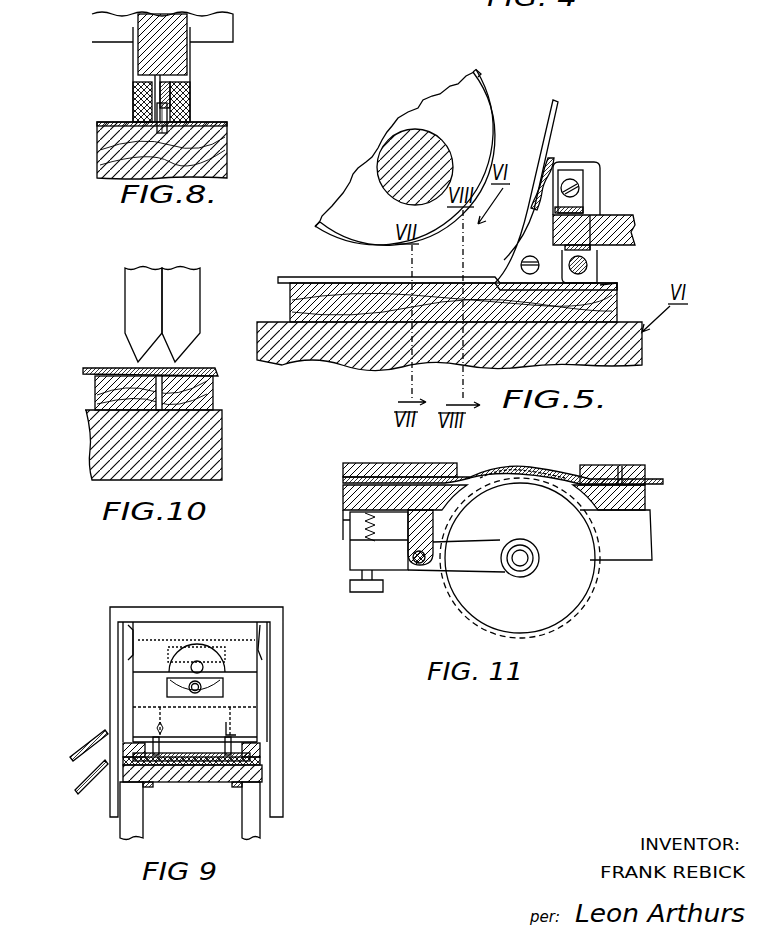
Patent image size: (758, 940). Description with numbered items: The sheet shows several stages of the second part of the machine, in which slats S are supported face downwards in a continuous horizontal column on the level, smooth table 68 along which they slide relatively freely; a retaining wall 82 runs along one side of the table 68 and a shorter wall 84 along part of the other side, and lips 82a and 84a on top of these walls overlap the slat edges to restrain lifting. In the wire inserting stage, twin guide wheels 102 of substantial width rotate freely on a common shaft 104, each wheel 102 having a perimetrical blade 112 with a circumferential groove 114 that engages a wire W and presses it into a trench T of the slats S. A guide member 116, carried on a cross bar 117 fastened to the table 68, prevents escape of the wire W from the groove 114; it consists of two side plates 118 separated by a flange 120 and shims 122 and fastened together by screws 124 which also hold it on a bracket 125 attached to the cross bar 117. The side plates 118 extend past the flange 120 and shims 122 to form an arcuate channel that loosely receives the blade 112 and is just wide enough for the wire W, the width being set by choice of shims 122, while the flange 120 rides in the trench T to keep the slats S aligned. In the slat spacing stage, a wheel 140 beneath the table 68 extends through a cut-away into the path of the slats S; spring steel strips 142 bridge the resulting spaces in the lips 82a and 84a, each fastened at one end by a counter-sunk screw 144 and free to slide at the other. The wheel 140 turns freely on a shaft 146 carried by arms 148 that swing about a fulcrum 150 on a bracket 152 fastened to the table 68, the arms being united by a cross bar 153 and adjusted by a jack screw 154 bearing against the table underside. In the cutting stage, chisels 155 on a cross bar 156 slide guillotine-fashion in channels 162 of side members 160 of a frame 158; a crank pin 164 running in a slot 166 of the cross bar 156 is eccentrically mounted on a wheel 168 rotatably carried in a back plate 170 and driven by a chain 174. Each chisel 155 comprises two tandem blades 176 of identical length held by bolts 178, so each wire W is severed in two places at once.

In FIG. 8, the guide wheel 102 is at (187, 55).
In FIG. 5, the guide wheel 102 is at (419, 100).
In FIG. 5, the common shaft 104 is at (386, 144).
In FIG. 5, the perimetrical blade 112 is at (484, 72).
In FIG. 5, the circumferential groove 114 is at (540, 99).
In FIG. 5, the guide member 116 is at (652, 186).
In FIG. 8, the cross bar 117 is at (233, 38).
In FIG. 5, the cross bar 117 is at (634, 226).
In FIG. 8, the side plate 118 is at (133, 96).
In FIG. 5, the side plate 118 is at (592, 168).
In FIG. 8, the flange 120 is at (150, 124).
In FIG. 5, the flange 120 is at (548, 158).
In FIG. 8, the shim 122 is at (167, 125).
In FIG. 5, the shim 122 is at (566, 165).
In FIG. 5, the screw 124 is at (579, 190).
In FIG. 5, the bracket 125 is at (579, 186).
In FIG. 8, the wire W is at (190, 108).
In FIG. 10, the wire W is at (215, 380).
In FIG. 5, the wire W is at (558, 110).
In FIG. 8, the slat S is at (98, 141).
In FIG. 10, the slat S is at (213, 403).
In FIG. 5, the slat S is at (453, 302).
In FIG. 11, the slat S is at (481, 476).
In FIG. 9, the slat S is at (262, 766).
In FIG. 8, the trench T is at (210, 138).
In FIG. 10, the table 68 is at (215, 470).
In FIG. 5, the table 68 is at (275, 308).
In FIG. 11, the table 68 is at (344, 494).
In FIG. 9, the table 68 is at (262, 778).
In FIG. 10, the chisel 155 is at (160, 295).
In FIG. 9, the chisel 155 is at (218, 748).
In FIG. 10, the blade 176 is at (134, 353).
In FIG. 11, the lip 82a is at (426, 463).
In FIG. 9, the lip 82a is at (262, 748).
In FIG. 9, the retaining wall 82 is at (262, 758).
In FIG. 11, the wheel 140 is at (592, 583).
In FIG. 11, the spring steel strip 142 is at (548, 470).
In FIG. 11, the counter-sunk screw 144 is at (632, 456).
In FIG. 11, the shaft 146 is at (508, 576).
In FIG. 11, the arm 148 is at (470, 568).
In FIG. 11, the fulcrum 150 is at (423, 562).
In FIG. 11, the bracket 152 is at (420, 526).
In FIG. 11, the cross bar 153 is at (356, 557).
In FIG. 11, the jack screw 154 is at (350, 576).
In FIG. 9, the cross bar 156 is at (130, 684).
In FIG. 9, the frame 158 is at (104, 711).
In FIG. 9, the side member 160 is at (108, 718).
In FIG. 9, the channel 162 is at (130, 647).
In FIG. 9, the crank pin 164 is at (223, 684).
In FIG. 9, the slot 166 is at (210, 694).
In FIG. 9, the wheel 168 is at (225, 664).
In FIG. 9, the back plate 170 is at (248, 668).
In FIG. 9, the chain 174 is at (70, 755).
In FIG. 9, the bolt 178 is at (237, 728).
In FIG. 9, the wall 84 is at (50, 762).
In FIG. 9, the lip 84a is at (119, 761).